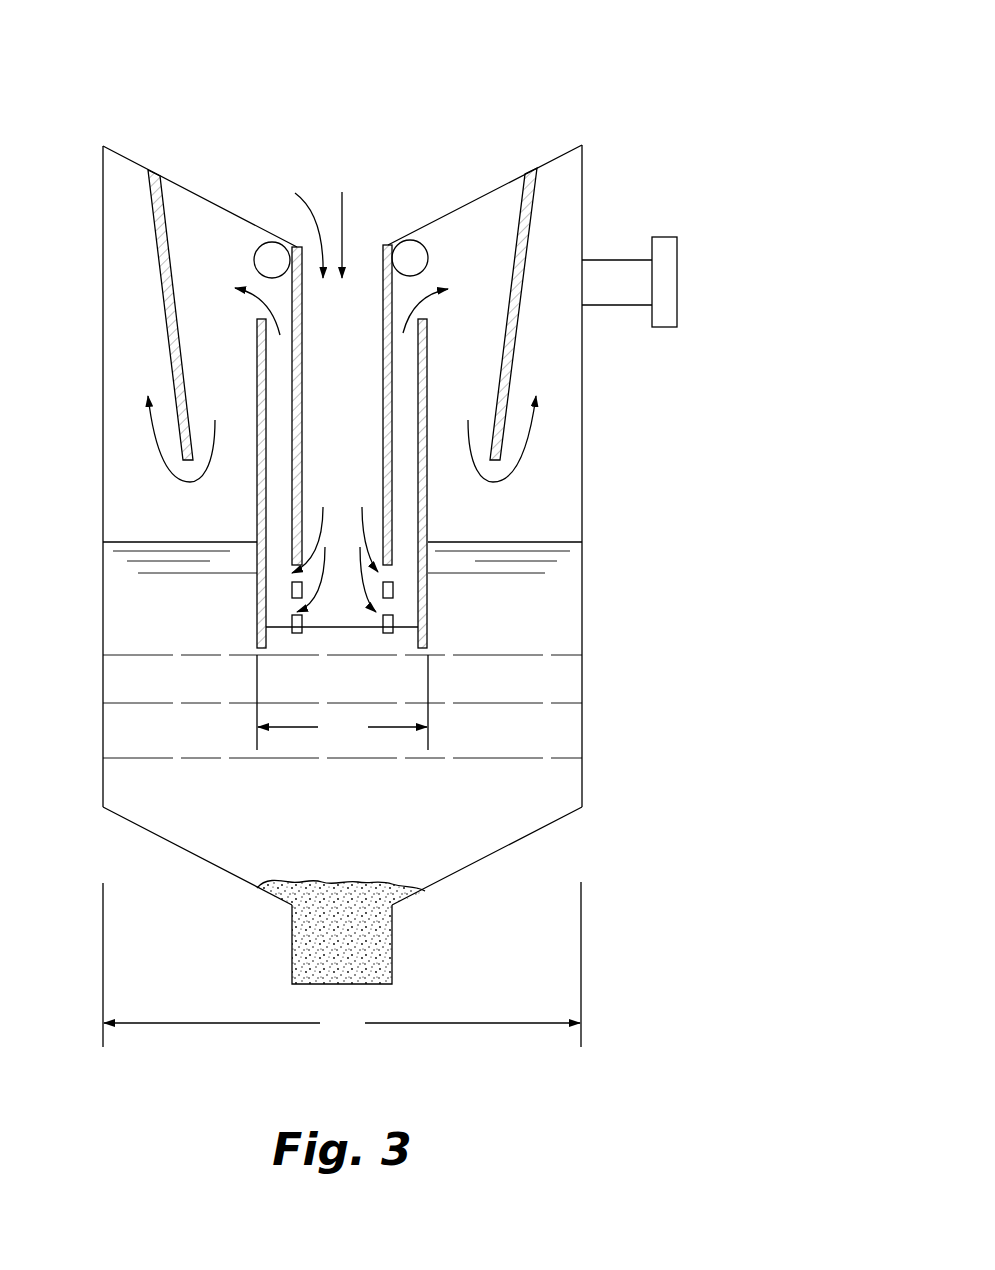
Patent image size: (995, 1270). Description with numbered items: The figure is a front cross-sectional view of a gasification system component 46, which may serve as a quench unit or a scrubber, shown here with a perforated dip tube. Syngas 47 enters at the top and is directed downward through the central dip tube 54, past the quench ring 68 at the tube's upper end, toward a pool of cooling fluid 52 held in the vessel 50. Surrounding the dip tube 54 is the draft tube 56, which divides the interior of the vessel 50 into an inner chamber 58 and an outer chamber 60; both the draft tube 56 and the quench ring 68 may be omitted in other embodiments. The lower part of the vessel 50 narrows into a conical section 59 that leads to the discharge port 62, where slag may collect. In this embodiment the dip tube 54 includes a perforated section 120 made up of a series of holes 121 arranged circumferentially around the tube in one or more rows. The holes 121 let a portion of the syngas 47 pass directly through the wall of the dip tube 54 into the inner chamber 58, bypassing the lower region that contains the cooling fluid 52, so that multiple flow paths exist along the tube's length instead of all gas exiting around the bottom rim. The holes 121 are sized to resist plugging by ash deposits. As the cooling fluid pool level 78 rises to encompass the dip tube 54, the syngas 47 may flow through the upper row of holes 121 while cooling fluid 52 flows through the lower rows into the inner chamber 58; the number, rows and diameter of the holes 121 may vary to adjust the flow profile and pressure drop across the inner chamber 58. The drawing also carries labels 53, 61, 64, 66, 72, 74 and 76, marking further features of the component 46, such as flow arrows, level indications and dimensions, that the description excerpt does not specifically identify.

The gasification system component 46 is at (598, 104).
The syngas 47 is at (342, 203).
The vessel 50 is at (583, 343).
The cooling fluid 52 is at (110, 678).
The gas stream 53 is at (293, 225).
The dip tube 54 is at (302, 410).
The draft tube 56 is at (257, 480).
The inner chamber 58 is at (396, 384).
The conical section 59 is at (512, 846).
The outer chamber 60 is at (560, 388).
The collected solids 61 is at (303, 929).
The discharge port 62 is at (393, 930).
The deflector baffle 64 is at (538, 178).
The outlet port 66 is at (665, 237).
The quench ring 68 is at (422, 241).
The channel width 72 is at (342, 702).
The housing width 74 is at (342, 964).
The liquid level 76 is at (537, 542).
The cooling fluid pool level 78 is at (335, 627).
The perforated section 120 is at (385, 633).
The holes 121 is at (382, 612).